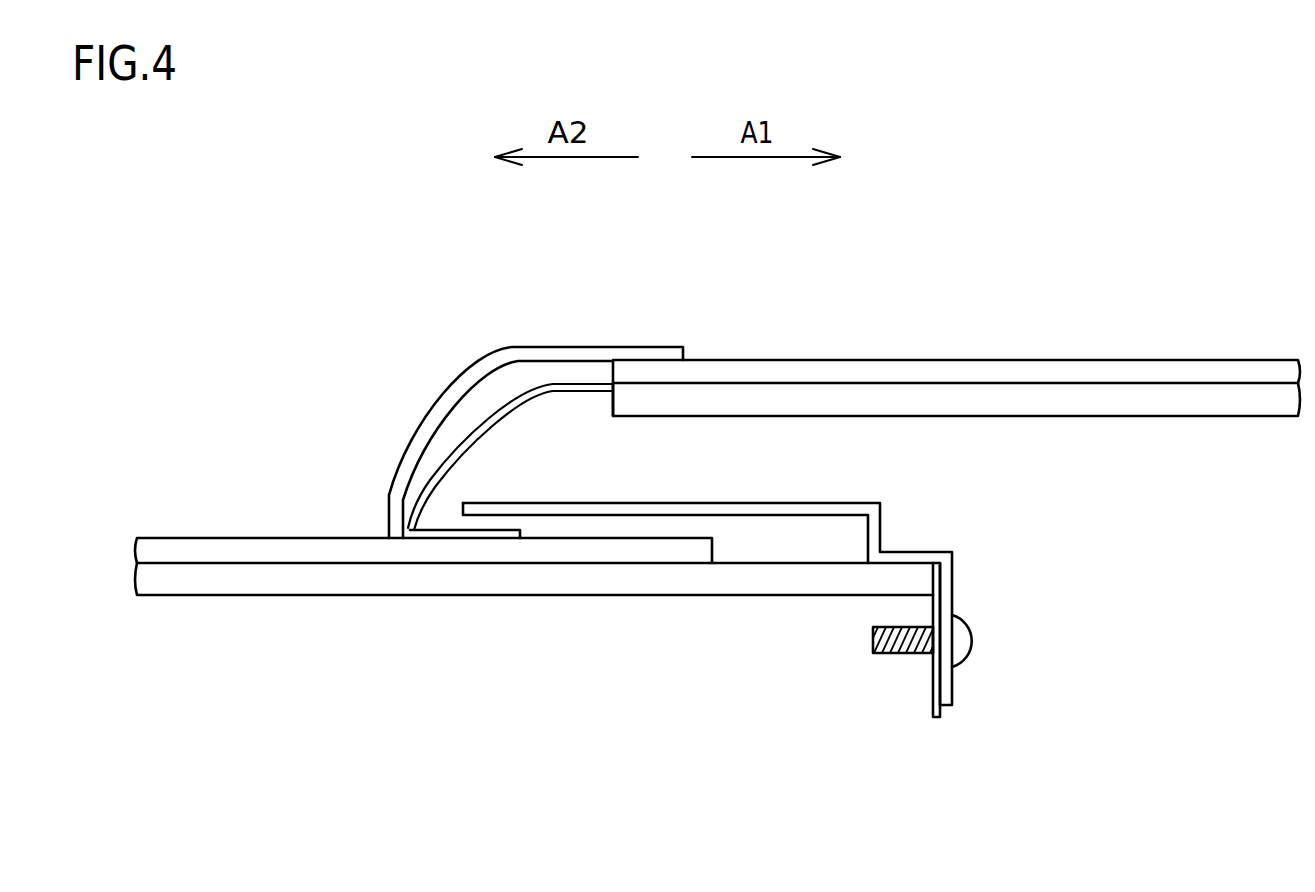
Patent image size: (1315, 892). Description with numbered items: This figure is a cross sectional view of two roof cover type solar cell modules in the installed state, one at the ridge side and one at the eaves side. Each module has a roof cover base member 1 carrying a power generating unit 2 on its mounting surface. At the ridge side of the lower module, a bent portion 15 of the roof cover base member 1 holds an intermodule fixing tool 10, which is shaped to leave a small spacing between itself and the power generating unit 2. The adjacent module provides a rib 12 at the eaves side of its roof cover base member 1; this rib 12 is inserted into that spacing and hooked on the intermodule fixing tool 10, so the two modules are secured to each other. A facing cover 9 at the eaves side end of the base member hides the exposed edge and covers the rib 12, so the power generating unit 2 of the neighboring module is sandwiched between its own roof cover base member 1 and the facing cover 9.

The roof cover base member 1 is at (1075, 407).
The power generating unit 2 is at (852, 360).
The facing cover 9 is at (583, 350).
The intermodule fixing tool 10 is at (755, 510).
The rib 12 is at (442, 530).
The bent portion 15 is at (933, 687).